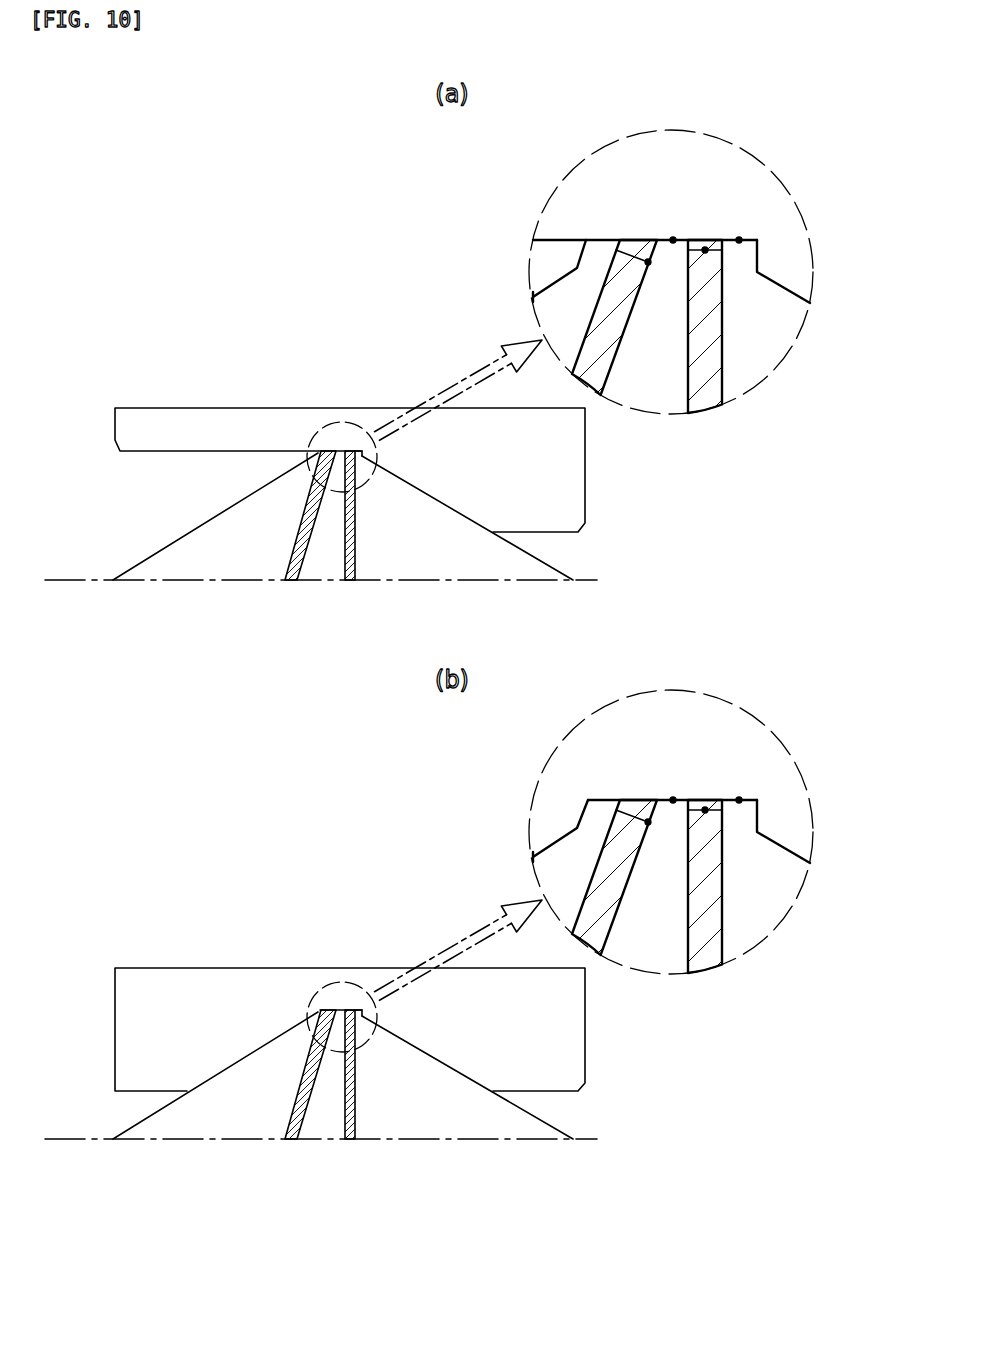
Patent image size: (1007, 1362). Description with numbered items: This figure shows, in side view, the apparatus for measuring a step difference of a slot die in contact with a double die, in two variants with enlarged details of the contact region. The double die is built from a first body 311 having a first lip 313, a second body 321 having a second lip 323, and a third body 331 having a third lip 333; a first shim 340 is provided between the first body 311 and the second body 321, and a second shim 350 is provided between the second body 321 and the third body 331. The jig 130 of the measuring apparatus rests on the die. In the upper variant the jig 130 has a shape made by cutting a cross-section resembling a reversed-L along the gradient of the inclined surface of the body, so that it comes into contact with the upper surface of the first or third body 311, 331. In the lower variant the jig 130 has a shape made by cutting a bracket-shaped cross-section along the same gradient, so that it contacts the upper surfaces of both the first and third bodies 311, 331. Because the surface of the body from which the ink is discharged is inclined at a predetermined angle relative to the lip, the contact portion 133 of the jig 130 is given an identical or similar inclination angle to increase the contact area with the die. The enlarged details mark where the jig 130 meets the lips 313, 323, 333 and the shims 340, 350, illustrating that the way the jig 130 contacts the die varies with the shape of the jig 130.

The jig 130 is at (190, 422).
The contact portion 133 is at (458, 512).
The first body 311 is at (192, 553).
The first lip 313 is at (600, 252).
The second body 321 is at (327, 560).
The second lip 323 is at (680, 255).
The third body 331 is at (482, 563).
The third lip 333 is at (745, 250).
The first shim 340 is at (285, 557).
The second shim 350 is at (353, 553).